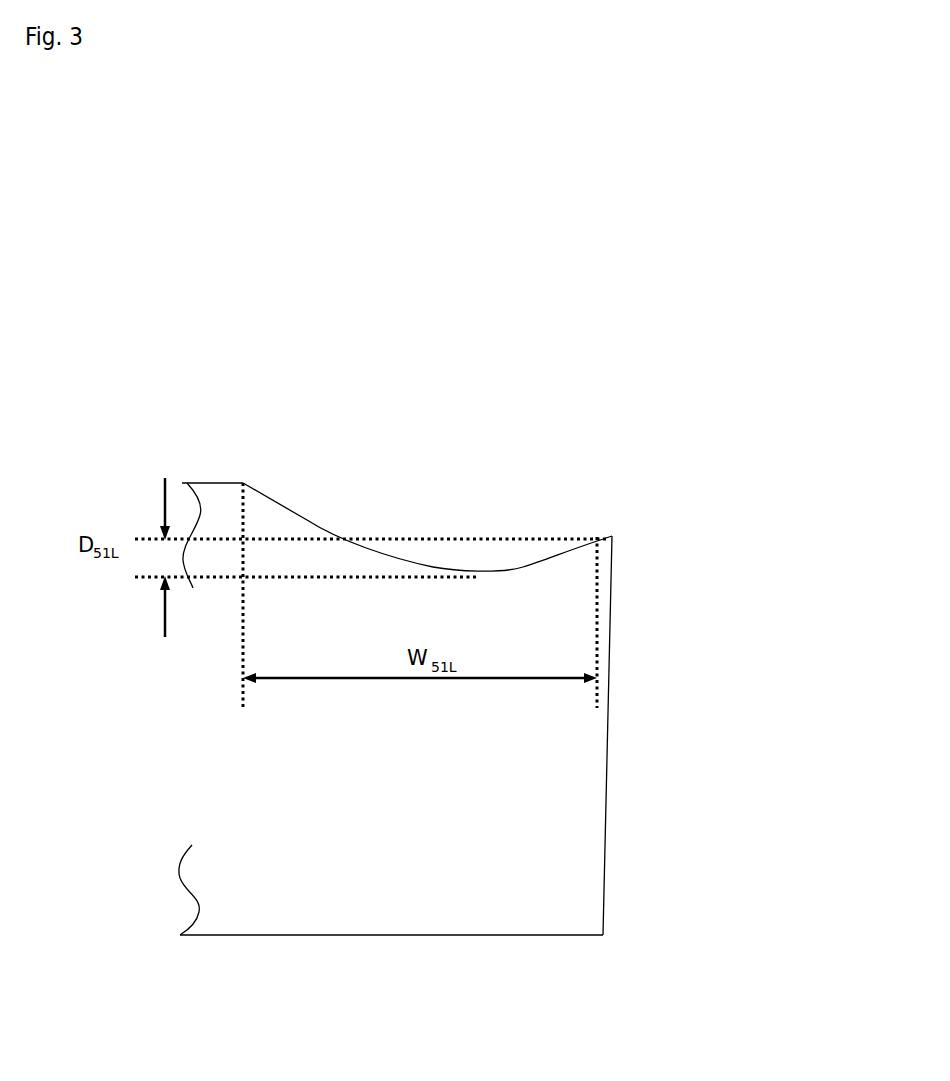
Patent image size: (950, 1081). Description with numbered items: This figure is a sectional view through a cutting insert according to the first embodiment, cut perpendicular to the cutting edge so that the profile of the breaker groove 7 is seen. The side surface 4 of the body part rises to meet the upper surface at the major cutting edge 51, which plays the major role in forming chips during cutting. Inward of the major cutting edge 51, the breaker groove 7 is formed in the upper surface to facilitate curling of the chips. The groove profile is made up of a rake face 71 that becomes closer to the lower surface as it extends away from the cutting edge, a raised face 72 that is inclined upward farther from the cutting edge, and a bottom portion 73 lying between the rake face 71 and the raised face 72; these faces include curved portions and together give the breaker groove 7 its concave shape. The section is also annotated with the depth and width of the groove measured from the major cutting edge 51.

The side surface 4 is at (605, 769).
The major cutting edge 51 is at (516, 382).
The breaker groove 7 is at (461, 382).
The rake face 71 is at (589, 451).
The raised face 72 is at (305, 520).
The bottom portion 73 is at (468, 570).